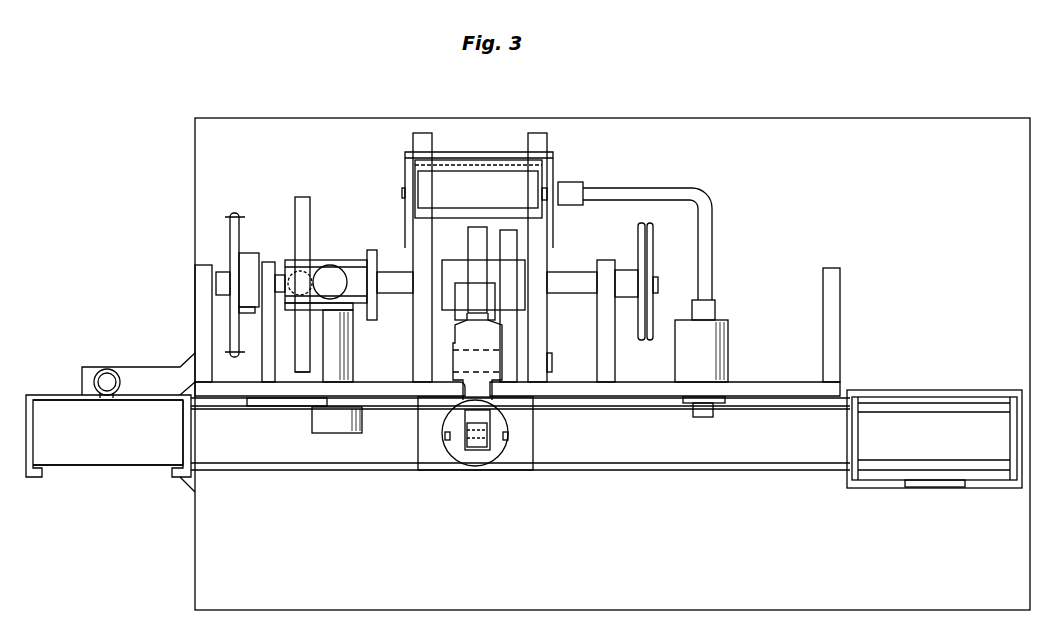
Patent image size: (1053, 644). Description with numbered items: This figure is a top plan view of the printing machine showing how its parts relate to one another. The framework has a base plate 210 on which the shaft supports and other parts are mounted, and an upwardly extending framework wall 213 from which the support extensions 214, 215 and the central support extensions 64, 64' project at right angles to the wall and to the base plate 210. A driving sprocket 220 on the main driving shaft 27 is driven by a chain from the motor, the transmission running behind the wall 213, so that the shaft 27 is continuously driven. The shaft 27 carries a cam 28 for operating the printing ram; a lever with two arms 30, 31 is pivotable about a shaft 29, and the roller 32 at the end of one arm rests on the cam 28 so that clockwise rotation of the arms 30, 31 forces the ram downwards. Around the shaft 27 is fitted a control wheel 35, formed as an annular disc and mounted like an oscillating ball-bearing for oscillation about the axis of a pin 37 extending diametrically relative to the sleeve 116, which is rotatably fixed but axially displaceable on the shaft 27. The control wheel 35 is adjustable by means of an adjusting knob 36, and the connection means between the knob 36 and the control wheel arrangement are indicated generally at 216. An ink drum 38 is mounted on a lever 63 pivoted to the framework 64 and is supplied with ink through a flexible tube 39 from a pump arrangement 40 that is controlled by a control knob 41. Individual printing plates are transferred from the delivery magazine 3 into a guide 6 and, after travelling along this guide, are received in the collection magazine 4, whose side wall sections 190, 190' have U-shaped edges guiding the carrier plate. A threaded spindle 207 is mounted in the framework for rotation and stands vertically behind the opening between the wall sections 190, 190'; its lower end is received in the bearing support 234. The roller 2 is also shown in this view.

The roller 2 is at (478, 462).
The delivery magazine 3 is at (968, 415).
The collection magazine 4 is at (138, 405).
The guide 6 is at (750, 466).
The main driving shaft 27 is at (560, 294).
The cam 28 is at (470, 240).
The shaft 29 is at (553, 362).
The lever arm 30 is at (478, 332).
The lever arm 31 is at (484, 392).
The roller 32 is at (467, 307).
The control wheel 35 is at (304, 372).
The adjusting knob 36 is at (345, 430).
The pin 37 is at (297, 268).
The ink drum 38 is at (553, 168).
The flexible tube 39 is at (603, 188).
The pump arrangement 40 is at (697, 365).
The control knob 41 is at (705, 417).
The lever 63 is at (472, 148).
The central support extension 64 is at (553, 227).
The central support extension 64' is at (400, 230).
The sleeve 116 is at (355, 268).
The side wall section 190 is at (108, 436).
The side wall section 190' is at (105, 372).
The spindle 207 is at (107, 369).
The base plate 210 is at (847, 125).
The framework wall 213 is at (772, 388).
The support extension 214 is at (202, 275).
The support extension 215 is at (836, 290).
The connection means 216 is at (343, 347).
The driving sprocket 220 is at (234, 358).
The bearing support 234 is at (163, 367).